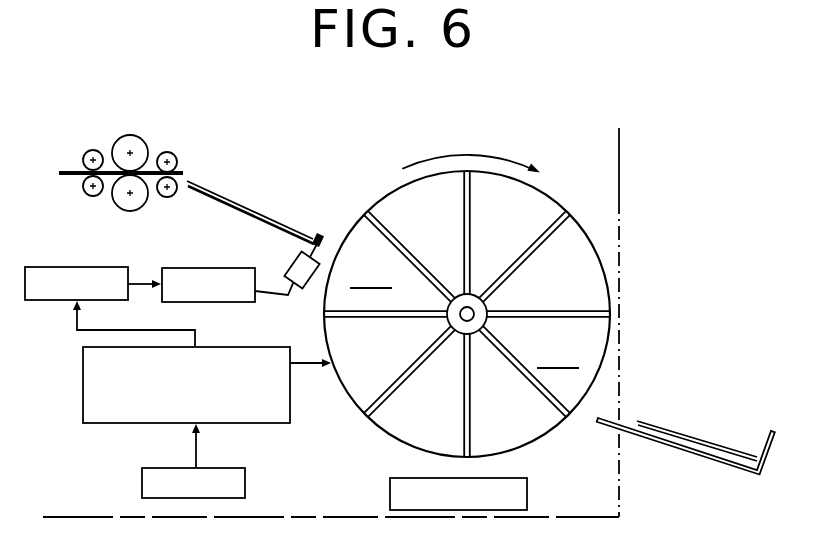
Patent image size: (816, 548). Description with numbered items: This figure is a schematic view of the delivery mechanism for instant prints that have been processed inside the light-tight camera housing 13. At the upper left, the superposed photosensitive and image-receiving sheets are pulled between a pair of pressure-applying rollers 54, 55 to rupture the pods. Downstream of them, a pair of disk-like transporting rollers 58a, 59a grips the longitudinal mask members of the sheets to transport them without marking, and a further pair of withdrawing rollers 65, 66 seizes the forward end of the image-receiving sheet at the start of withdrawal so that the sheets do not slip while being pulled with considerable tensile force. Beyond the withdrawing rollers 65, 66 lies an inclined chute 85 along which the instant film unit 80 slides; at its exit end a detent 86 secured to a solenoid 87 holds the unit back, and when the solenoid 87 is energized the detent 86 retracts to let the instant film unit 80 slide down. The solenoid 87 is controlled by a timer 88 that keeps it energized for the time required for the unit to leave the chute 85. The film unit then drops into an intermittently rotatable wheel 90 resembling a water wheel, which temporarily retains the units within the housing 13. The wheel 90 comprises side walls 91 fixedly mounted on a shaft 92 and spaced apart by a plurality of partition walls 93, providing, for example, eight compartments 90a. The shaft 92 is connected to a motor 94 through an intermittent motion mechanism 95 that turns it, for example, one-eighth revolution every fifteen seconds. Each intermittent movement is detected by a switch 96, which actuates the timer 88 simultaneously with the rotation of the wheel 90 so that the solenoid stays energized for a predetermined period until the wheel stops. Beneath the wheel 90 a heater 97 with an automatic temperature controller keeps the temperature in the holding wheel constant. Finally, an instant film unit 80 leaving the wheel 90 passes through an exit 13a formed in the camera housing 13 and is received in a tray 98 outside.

The camera housing 13 is at (620, 188).
The exit 13a is at (619, 397).
The pressure-applying roller 54 is at (93, 150).
The pressure-applying roller 55 is at (93, 196).
The disk-like transporting roller 58a is at (131, 135).
The disk-like transporting roller 59a is at (130, 211).
The withdrawing roller 65 is at (168, 152).
The withdrawing roller 66 is at (167, 197).
The instant film unit 80 is at (245, 209).
The inclined chute 85 is at (190, 182).
The detent 86 is at (320, 236).
The solenoid 87 is at (296, 262).
The timer 88 is at (205, 268).
The intermittently rotatable wheel 90 is at (463, 323).
The compartment 90a is at (468, 314).
The side wall 91 is at (513, 433).
The shaft 92 is at (460, 335).
The partition wall 93 is at (352, 320).
The motor 94 is at (142, 483).
The intermittent motion mechanism 95 is at (290, 418).
The switch 96 is at (50, 301).
The heater 97 is at (527, 492).
The tray 98 is at (683, 456).